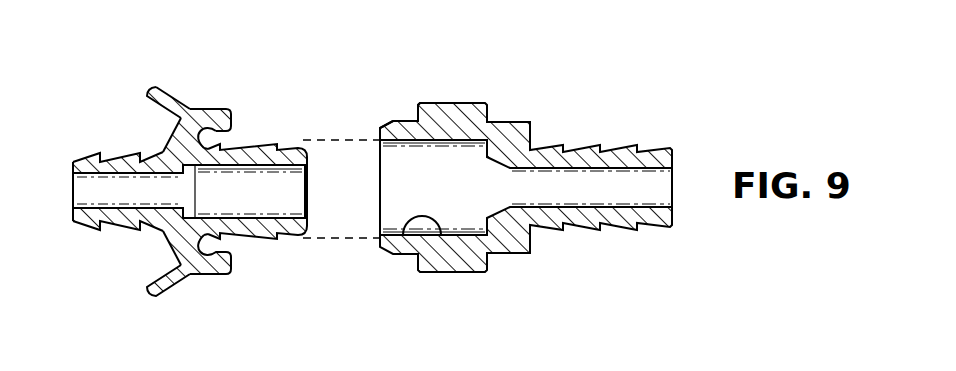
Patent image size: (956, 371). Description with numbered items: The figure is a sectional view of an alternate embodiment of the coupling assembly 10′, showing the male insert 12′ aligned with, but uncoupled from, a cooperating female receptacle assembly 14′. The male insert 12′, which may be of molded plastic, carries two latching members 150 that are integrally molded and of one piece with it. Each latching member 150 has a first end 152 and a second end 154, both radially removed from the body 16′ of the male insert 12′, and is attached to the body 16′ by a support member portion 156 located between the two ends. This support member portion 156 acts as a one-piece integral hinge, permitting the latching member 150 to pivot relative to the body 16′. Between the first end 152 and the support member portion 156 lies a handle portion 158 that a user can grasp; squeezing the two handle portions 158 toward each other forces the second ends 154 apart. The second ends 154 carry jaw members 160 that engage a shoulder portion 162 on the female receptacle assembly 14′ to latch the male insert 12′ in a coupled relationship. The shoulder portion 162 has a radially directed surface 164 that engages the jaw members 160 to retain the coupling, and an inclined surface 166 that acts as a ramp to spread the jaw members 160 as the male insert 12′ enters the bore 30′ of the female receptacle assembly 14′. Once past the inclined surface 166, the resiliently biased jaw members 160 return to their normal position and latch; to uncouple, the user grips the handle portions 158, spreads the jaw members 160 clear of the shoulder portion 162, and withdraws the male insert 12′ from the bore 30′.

The coupling assembly 10′ is at (488, 61).
The male insert 12′ is at (150, 140).
The female receptacle assembly 14′ is at (523, 117).
The body 16′ is at (260, 240).
The bore 30′ is at (403, 237).
The latching member 150 is at (178, 90).
The first end 152 is at (149, 89).
The second end 154 is at (228, 110).
The support member portion 156 is at (177, 254).
The handle portion 158 is at (162, 91).
The jaw member 160 is at (229, 128).
The shoulder portion 162 is at (400, 120).
The radially directed surface 164 is at (419, 106).
The inclined surface 166 is at (380, 130).